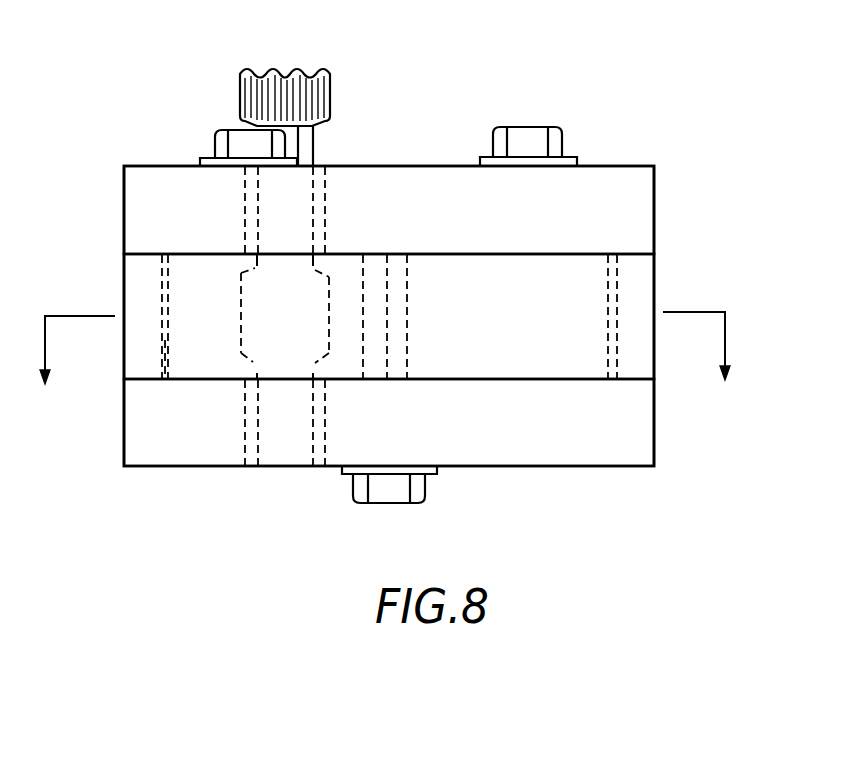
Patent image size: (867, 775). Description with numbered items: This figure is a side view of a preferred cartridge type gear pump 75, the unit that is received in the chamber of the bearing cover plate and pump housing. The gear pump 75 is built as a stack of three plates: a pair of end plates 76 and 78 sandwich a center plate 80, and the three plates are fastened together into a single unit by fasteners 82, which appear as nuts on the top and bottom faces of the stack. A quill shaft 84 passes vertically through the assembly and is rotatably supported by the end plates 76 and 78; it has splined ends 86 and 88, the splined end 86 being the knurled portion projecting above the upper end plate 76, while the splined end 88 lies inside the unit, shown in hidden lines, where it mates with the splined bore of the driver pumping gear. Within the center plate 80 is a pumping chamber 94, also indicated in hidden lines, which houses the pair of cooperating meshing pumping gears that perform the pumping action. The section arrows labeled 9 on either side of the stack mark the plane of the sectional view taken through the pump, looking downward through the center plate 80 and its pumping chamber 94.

The cartridge gear pump 75 is at (650, 132).
The end plate 76 is at (654, 192).
The end plate 78 is at (638, 443).
The center plate 80 is at (652, 352).
The fasteners 82 is at (215, 147).
The quill shaft 84 is at (313, 153).
The splined end 86 is at (332, 100).
The splined end 88 is at (241, 354).
The pumping chamber 94 is at (170, 373).
The section line 9- 9 is at (387, 358).